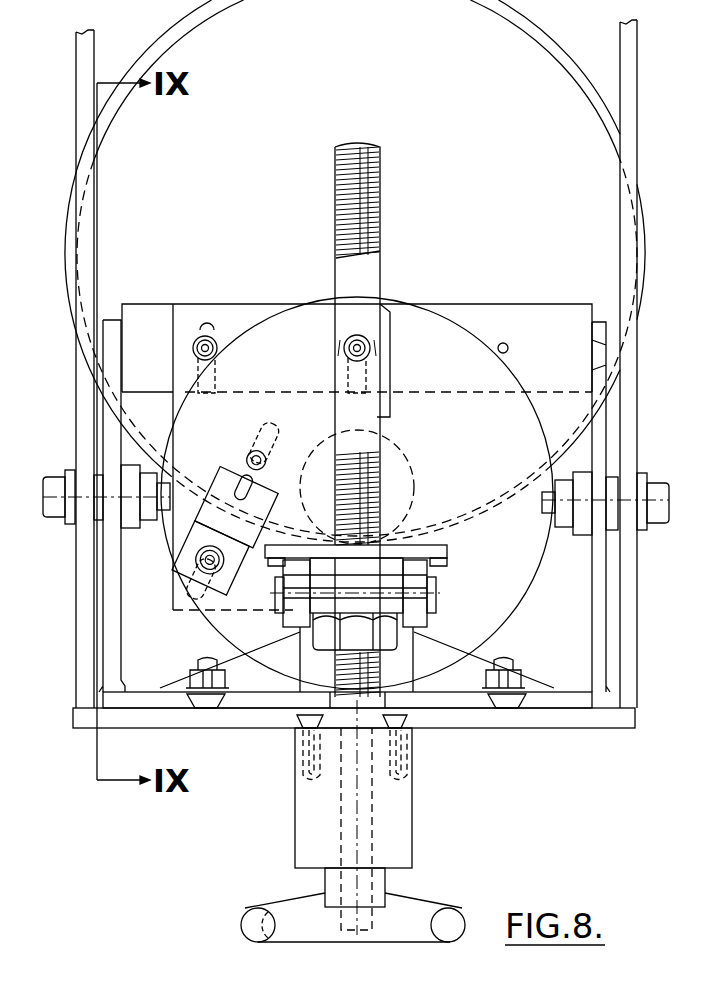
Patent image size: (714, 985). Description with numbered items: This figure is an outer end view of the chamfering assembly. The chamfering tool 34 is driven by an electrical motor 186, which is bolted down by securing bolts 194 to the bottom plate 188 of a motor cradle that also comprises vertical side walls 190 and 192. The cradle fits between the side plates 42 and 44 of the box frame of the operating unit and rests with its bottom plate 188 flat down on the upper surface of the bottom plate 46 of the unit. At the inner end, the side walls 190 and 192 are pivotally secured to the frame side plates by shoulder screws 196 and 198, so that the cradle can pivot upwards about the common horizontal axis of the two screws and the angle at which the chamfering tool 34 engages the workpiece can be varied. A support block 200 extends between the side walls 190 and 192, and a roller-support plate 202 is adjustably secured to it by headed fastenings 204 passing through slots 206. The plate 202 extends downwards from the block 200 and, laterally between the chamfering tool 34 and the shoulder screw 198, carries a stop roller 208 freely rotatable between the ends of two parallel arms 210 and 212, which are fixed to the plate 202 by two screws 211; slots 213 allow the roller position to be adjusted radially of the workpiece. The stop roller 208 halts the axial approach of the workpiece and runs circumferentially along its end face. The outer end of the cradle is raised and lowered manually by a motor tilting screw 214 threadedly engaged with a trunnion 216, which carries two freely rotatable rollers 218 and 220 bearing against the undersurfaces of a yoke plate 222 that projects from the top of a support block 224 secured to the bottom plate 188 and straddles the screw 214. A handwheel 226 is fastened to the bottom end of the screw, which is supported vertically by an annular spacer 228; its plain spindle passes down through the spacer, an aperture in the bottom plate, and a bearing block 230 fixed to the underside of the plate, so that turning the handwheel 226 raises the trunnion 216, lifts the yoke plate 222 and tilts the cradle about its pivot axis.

The chamfering tool 34 is at (413, 463).
The side plate 42 is at (626, 592).
The side plate 44 is at (85, 614).
The bottom plate 46 is at (230, 718).
The electrical motor 186 is at (532, 549).
The bottom plate 188 is at (472, 703).
The side wall 190 is at (110, 662).
The side wall 192 is at (600, 643).
The securing bolts 194 is at (200, 664).
The shoulder screw 196 is at (660, 490).
The shoulder screw 198 is at (53, 485).
The support block 200 is at (548, 330).
The roller-support plate 202 is at (229, 318).
The headed fastenings 204 is at (203, 338).
The slots 206 is at (333, 374).
The stop roller 208 is at (208, 516).
The arm 210 is at (248, 466).
The screws 211 is at (196, 565).
The arm 212 is at (178, 610).
The slots 213 is at (263, 450).
The motor tilting screw 214 is at (381, 221).
The trunnion 216 is at (316, 639).
The roller 218 is at (290, 582).
The roller 220 is at (420, 586).
The yoke plate 222 is at (447, 555).
The support block 224 is at (403, 660).
The handwheel 226 is at (452, 925).
The annular spacer 228 is at (385, 700).
The bearing block 230 is at (397, 815).